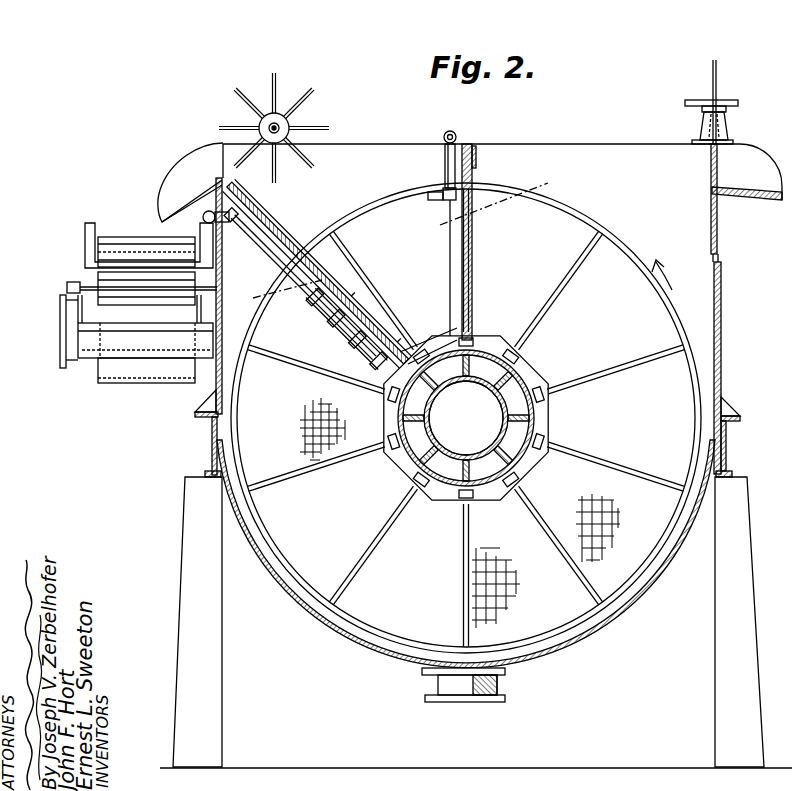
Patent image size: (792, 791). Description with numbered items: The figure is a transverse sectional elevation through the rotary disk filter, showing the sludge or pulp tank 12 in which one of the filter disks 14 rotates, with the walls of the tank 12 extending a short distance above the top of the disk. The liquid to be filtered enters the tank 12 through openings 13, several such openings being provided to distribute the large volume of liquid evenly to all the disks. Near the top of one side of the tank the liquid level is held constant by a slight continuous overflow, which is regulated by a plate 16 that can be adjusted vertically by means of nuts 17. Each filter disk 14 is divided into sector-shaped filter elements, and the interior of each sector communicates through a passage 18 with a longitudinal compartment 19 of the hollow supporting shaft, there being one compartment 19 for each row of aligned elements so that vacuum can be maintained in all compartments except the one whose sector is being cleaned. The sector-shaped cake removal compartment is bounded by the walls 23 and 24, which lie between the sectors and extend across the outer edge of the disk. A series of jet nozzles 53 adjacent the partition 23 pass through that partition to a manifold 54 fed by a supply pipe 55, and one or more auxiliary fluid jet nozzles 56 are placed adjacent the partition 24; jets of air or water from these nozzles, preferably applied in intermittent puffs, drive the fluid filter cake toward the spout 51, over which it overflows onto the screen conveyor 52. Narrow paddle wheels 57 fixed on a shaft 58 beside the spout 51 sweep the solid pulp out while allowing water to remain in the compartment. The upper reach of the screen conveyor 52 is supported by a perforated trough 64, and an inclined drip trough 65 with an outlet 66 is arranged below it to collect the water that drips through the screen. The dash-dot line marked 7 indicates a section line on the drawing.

The section line 7 is at (399, 242).
The sludge or pulp tank 12 is at (722, 344).
The openings 13 is at (458, 702).
The filter disks 14 is at (465, 418).
The plate 16 is at (711, 224).
The nuts 17 is at (738, 104).
The passage 18 is at (446, 494).
The longitudinal compartment 19 is at (452, 463).
The wall 23 is at (312, 270).
The wall 24 is at (473, 260).
The spout 51 is at (178, 208).
The screen conveyor 52 is at (117, 243).
The jet nozzles 53 is at (354, 340).
The manifold 54 is at (344, 336).
The supply pipe 55 is at (262, 245).
The auxiliary fluid jet nozzles 56 is at (432, 203).
The paddle wheels 57 is at (292, 119).
The shaft 58 is at (277, 125).
The perforated trough 64 is at (90, 260).
The inclined drip trough 65 is at (147, 335).
The outlet 66 is at (75, 337).